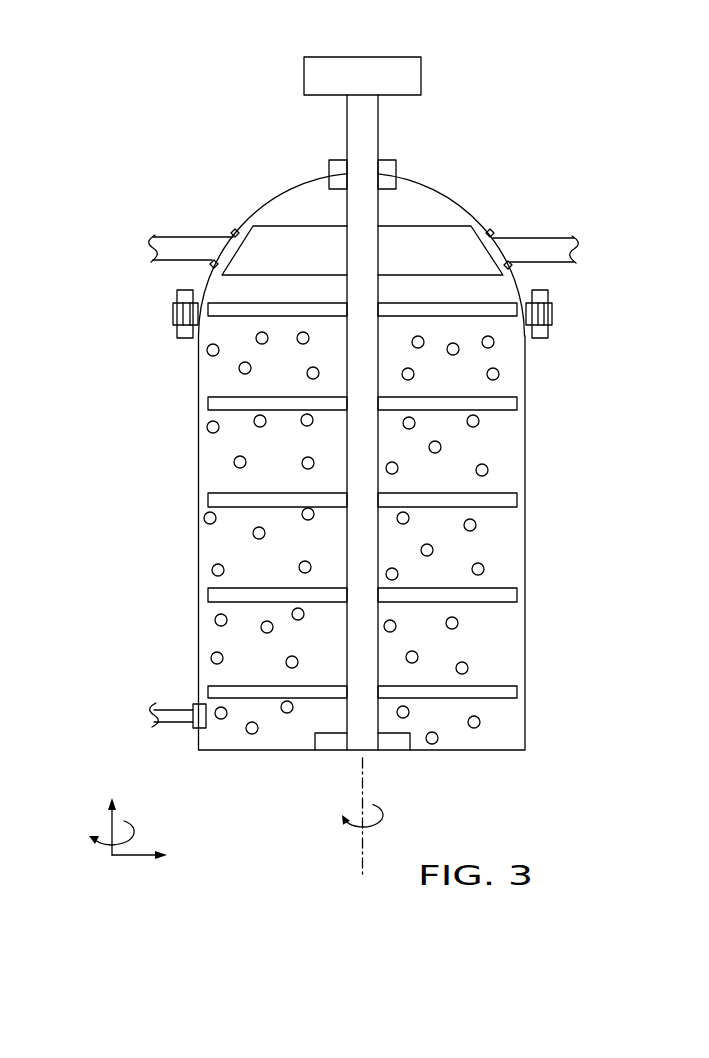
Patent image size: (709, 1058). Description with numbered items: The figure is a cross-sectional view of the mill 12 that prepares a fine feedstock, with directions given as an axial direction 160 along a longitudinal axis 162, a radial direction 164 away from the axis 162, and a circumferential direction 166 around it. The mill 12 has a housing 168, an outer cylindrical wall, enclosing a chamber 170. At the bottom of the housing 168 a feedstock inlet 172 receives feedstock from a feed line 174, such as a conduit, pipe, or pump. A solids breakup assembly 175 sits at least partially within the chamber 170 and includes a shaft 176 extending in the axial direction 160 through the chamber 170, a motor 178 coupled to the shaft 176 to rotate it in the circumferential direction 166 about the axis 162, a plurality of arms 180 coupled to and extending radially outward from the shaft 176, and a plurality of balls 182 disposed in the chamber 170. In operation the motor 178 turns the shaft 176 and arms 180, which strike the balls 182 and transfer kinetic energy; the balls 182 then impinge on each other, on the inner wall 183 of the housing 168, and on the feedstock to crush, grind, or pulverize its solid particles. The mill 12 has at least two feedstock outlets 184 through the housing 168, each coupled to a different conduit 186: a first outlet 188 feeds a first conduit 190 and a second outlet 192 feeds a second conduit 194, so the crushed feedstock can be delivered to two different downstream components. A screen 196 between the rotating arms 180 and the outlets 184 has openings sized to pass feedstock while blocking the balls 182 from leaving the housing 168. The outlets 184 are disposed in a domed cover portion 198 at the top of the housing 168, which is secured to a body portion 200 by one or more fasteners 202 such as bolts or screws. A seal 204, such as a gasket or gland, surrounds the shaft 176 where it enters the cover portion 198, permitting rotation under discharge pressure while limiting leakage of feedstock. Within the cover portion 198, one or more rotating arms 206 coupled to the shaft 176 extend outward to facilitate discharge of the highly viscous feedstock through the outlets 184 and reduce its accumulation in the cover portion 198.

The mill 12 is at (126, 100).
The axial direction 160 is at (110, 832).
The longitudinal axis 162 is at (360, 853).
The radial direction 164 is at (132, 858).
The circumferential direction 166 is at (123, 830).
The housing 168 is at (525, 422).
The chamber 170 is at (505, 475).
The feedstock inlet 172 is at (190, 720).
The feed line 174 is at (190, 710).
The solids breakup assembly 175 is at (509, 559).
The shaft 176 is at (370, 752).
The motor 178 is at (421, 72).
The plurality of arms 180 is at (225, 397).
The plurality of balls 182 is at (254, 536).
The inner wall 183 is at (522, 376).
The feedstock outlets 184 is at (223, 247).
The conduit 186 is at (170, 237).
The first outlet 188 is at (160, 263).
The first conduit 190 is at (228, 251).
The second outlet 192 is at (510, 263).
The second conduit 194 is at (575, 262).
The screen 196 is at (503, 320).
The cover portion 198 is at (433, 187).
The body portion 200 is at (200, 514).
The fasteners 202 is at (184, 338).
The seal 204 is at (338, 160).
The rotating arms 206 is at (298, 225).